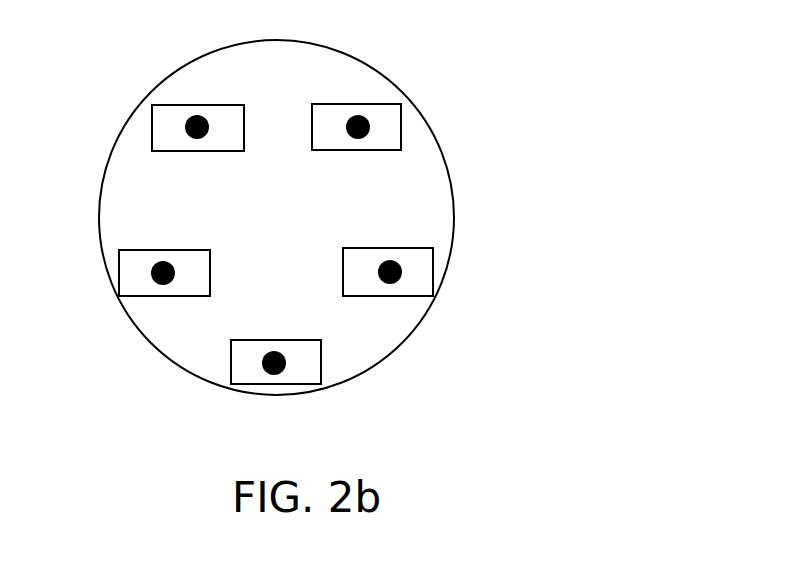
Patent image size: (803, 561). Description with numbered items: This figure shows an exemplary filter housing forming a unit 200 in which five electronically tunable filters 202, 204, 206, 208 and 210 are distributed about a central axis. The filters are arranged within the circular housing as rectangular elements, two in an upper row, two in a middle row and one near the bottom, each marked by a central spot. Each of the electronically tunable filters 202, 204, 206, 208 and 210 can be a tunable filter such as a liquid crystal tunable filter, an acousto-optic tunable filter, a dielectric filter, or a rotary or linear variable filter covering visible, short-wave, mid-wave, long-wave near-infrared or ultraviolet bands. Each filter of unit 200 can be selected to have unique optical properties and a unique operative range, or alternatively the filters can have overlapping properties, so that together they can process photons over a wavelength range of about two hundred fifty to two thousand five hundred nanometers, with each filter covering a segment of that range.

The unit 200 is at (507, 72).
The electronically tunable filter 202 is at (352, 104).
The electronically tunable filter 204 is at (200, 105).
The electronically tunable filter 206 is at (415, 248).
The electronically tunable filter 208 is at (272, 384).
The electronically tunable filter 210 is at (136, 250).